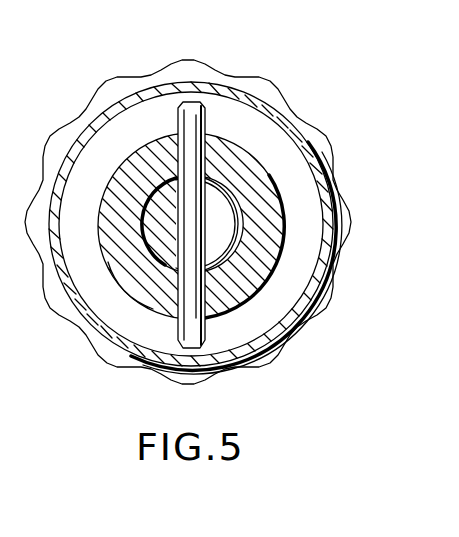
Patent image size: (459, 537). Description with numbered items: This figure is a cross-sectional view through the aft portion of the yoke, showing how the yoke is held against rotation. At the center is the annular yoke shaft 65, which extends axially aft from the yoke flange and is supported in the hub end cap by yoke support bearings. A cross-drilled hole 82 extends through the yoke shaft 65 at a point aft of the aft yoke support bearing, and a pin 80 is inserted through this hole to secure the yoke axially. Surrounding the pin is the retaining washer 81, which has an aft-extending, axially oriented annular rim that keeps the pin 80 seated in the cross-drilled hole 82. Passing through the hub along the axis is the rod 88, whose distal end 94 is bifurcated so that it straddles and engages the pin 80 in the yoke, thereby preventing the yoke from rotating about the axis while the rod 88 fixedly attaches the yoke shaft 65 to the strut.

The retaining washer 81 is at (92, 118).
The pin 80 is at (182, 107).
The rod 88 is at (223, 197).
The distal end 94 is at (237, 214).
The yoke shaft 65 is at (272, 250).
The cross-drilled hole 82 is at (172, 250).